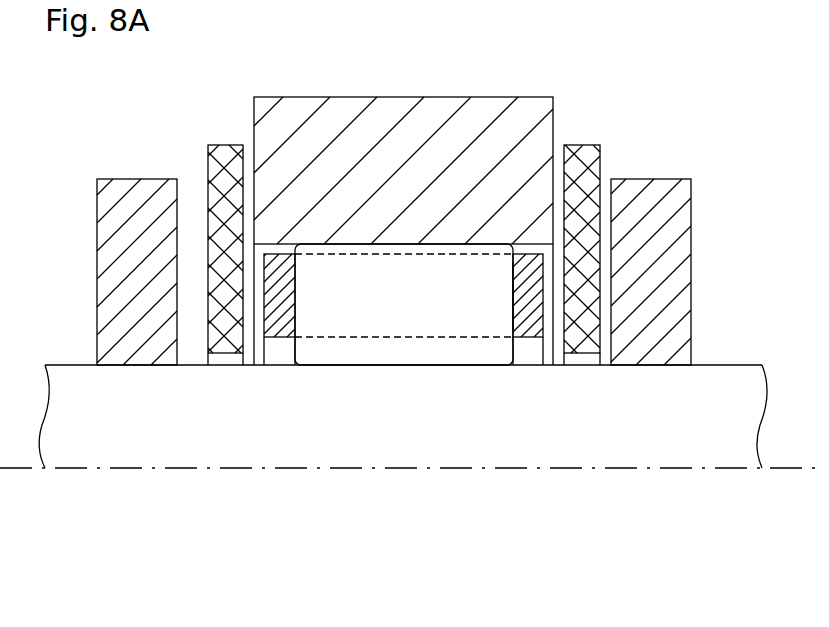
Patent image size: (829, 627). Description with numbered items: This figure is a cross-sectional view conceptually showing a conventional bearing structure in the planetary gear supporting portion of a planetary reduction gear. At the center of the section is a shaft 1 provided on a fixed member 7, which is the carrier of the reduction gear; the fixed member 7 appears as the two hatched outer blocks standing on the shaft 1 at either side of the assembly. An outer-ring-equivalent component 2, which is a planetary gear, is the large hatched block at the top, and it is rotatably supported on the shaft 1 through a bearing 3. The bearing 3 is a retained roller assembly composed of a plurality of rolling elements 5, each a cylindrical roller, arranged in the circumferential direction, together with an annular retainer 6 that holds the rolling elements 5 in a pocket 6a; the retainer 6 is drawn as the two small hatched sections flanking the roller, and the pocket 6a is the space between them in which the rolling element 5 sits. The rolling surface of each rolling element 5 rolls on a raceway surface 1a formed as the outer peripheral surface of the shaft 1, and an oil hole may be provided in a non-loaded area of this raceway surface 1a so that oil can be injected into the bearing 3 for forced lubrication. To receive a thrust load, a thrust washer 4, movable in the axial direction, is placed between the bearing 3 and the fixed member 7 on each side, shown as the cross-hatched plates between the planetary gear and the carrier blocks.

The shaft 1 is at (68, 368).
The rolling element raceway surface 1a is at (378, 364).
The outer-ring-equivalent component 2 is at (348, 97).
The bearing 3 is at (503, 66).
The thrust washer 4 is at (215, 163).
The rolling element 5 is at (403, 250).
The retainer 6 is at (523, 252).
The pocket 6a is at (518, 293).
The fixed member 7 is at (100, 213).